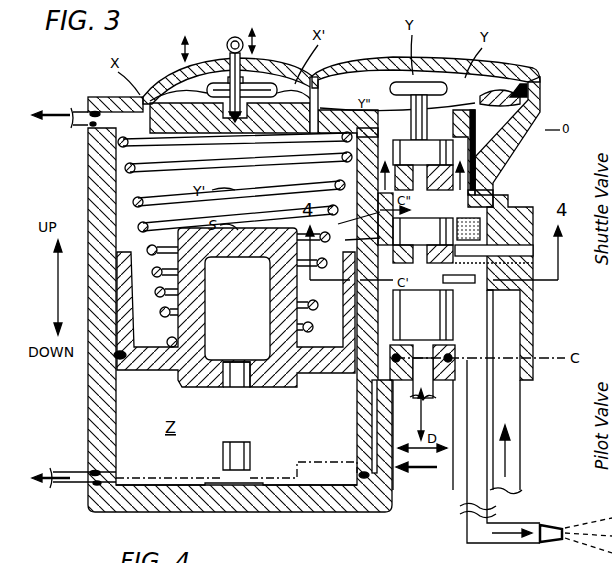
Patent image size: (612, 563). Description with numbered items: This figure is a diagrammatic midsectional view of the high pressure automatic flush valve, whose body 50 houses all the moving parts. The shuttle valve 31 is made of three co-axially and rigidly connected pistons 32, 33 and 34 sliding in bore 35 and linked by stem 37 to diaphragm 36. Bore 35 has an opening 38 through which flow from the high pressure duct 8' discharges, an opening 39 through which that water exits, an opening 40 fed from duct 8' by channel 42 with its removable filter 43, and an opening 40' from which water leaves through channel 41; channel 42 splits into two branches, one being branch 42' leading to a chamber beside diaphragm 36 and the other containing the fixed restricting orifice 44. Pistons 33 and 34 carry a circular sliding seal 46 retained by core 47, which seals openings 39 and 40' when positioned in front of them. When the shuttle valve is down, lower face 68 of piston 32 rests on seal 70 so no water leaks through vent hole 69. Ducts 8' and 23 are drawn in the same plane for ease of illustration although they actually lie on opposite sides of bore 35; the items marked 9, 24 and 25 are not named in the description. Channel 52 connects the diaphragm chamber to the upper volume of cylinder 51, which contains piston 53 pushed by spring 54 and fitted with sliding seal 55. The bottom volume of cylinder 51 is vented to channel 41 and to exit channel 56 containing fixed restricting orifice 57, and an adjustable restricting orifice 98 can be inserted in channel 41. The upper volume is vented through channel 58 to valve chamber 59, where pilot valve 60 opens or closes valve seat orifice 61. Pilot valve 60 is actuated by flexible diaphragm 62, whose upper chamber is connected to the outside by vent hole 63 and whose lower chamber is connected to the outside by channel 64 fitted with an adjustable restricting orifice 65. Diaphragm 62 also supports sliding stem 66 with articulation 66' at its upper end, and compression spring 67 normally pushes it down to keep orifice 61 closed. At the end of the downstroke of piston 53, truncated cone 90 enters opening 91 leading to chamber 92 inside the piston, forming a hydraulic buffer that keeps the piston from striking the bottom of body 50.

The annular bore passage 9 is at (416, 167).
The duct 23 is at (480, 458).
The nozzle 24 is at (552, 526).
The spray 25 is at (585, 540).
The shuttle valve 31 is at (353, 221).
The piston 32 is at (422, 335).
The piston 33 is at (416, 234).
The piston 34 is at (423, 165).
The bore 35 is at (490, 187).
The diaphragm 36 is at (395, 85).
The stem 37 is at (438, 105).
The opening 38 is at (460, 250).
The opening 39 is at (465, 280).
The opening 40 is at (491, 152).
The opening 40' is at (358, 218).
The channel 41 is at (372, 408).
The channel 42 is at (509, 150).
The channel branch 42' is at (498, 98).
The filter 43 is at (482, 232).
The fixed restricting orifice 44 is at (532, 112).
The circular sliding seal 46 is at (462, 260).
The core 47 is at (355, 240).
The body 50 is at (372, 62).
The cylinder 51 is at (105, 190).
The channel 52 is at (316, 80).
The piston 53 is at (150, 375).
The spring 54 is at (135, 224).
The sliding seal 55 is at (118, 358).
The exit channel 56 is at (76, 470).
The fixed restricting orifice 57 is at (95, 485).
The channel 58 is at (215, 153).
The valve chamber 59 is at (240, 133).
The pilot valve 60 is at (262, 84).
The valve seat orifice 61 is at (197, 40).
The flexible diaphragm 62 is at (165, 90).
The vent hole 63 is at (182, 64).
The channel 64 is at (118, 115).
The restricting orifice 65 is at (95, 110).
The sliding stem 66 is at (256, 55).
The articulation 66' is at (229, 32).
The compression spring 67 is at (228, 72).
The lower face 68 is at (362, 380).
The vent hole 69 is at (430, 392).
The seal 70 is at (418, 385).
The high pressure duct 8' is at (524, 392).
The truncated cone 90 is at (252, 468).
The opening 91 is at (238, 388).
The chamber 92 is at (237, 308).
The adjustable restricting orifice 98 is at (362, 470).